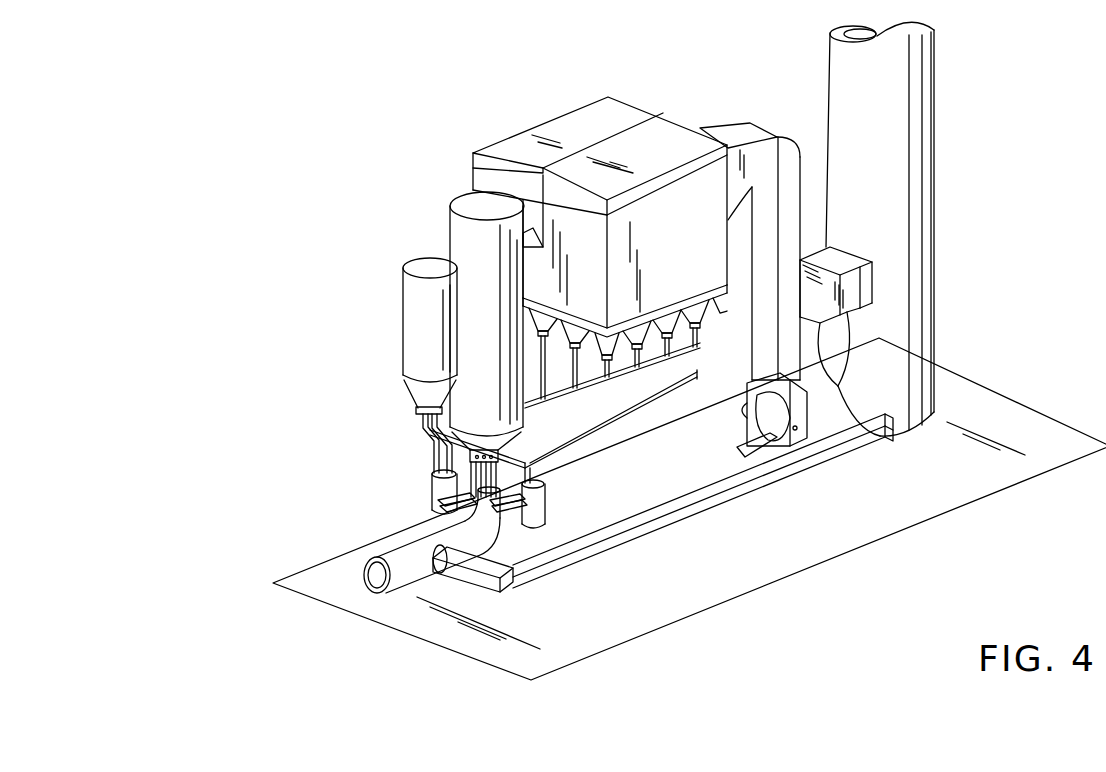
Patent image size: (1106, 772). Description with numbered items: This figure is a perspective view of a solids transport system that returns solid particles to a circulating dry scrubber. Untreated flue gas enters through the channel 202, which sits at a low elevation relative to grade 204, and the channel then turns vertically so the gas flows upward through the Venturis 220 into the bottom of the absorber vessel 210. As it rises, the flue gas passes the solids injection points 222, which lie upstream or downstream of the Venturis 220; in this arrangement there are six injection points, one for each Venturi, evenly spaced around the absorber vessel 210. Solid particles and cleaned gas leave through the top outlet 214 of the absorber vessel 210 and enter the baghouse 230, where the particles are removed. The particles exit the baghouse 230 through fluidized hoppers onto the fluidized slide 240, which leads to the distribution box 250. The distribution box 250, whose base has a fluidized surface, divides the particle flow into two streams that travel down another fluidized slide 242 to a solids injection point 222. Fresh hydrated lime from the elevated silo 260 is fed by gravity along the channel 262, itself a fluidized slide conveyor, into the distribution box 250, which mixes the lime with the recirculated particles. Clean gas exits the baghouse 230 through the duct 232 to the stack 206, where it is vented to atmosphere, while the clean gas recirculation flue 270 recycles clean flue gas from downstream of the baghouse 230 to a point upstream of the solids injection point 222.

The channel 202 is at (370, 548).
The grade 204 is at (345, 612).
The stack 206 is at (897, 160).
The circulating dry scrubber absorber vessel 210 is at (470, 232).
The top outlet 214 is at (525, 195).
The Venturis 220 is at (432, 476).
The solids injection points 222 is at (455, 490).
The baghouse 230 is at (663, 135).
The duct 232 is at (780, 157).
The fluidized slide 240 is at (650, 400).
The fluidized slide 242 is at (543, 516).
The distribution box 250 is at (548, 487).
The hydrated lime silo 260 is at (432, 322).
The channel 262 is at (430, 440).
The clean gas recirculation flue 270 is at (650, 540).